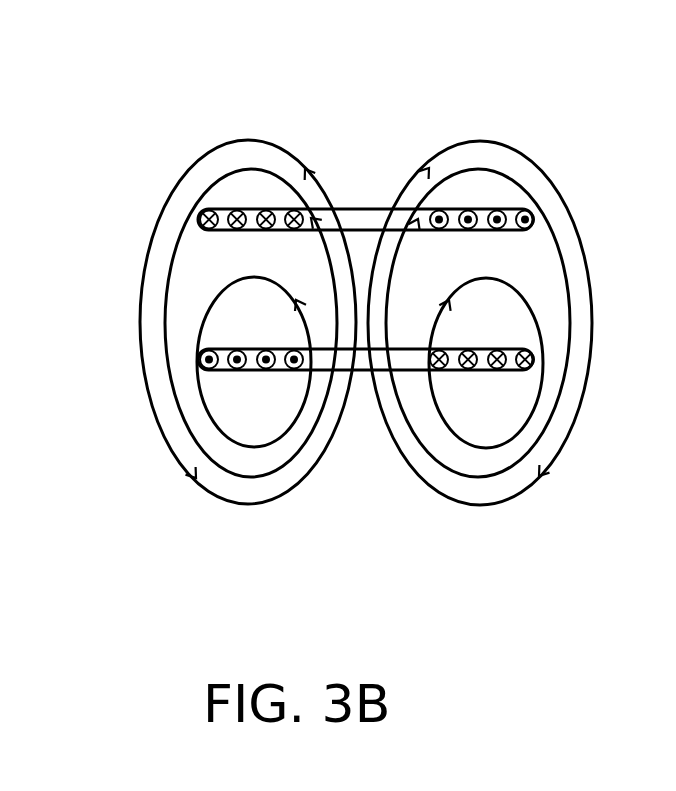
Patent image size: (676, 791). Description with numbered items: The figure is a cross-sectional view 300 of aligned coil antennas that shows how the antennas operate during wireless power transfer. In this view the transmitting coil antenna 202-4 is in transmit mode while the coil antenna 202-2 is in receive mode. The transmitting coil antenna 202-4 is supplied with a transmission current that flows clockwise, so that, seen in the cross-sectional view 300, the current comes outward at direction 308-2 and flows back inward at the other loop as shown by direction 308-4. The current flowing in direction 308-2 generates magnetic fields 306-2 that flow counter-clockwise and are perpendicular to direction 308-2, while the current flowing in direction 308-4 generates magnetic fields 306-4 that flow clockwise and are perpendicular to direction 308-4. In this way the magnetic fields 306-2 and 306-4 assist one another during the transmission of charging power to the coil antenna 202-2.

The cross-sectional view 300 is at (255, 102).
The coil antenna 202-2 is at (200, 212).
The transmitting coil antenna 202-4 is at (164, 230).
The magnetic fields 306-2 is at (167, 442).
The magnetic fields 306-4 is at (445, 497).
The direction 308-2 is at (200, 348).
The direction 308-4 is at (533, 349).